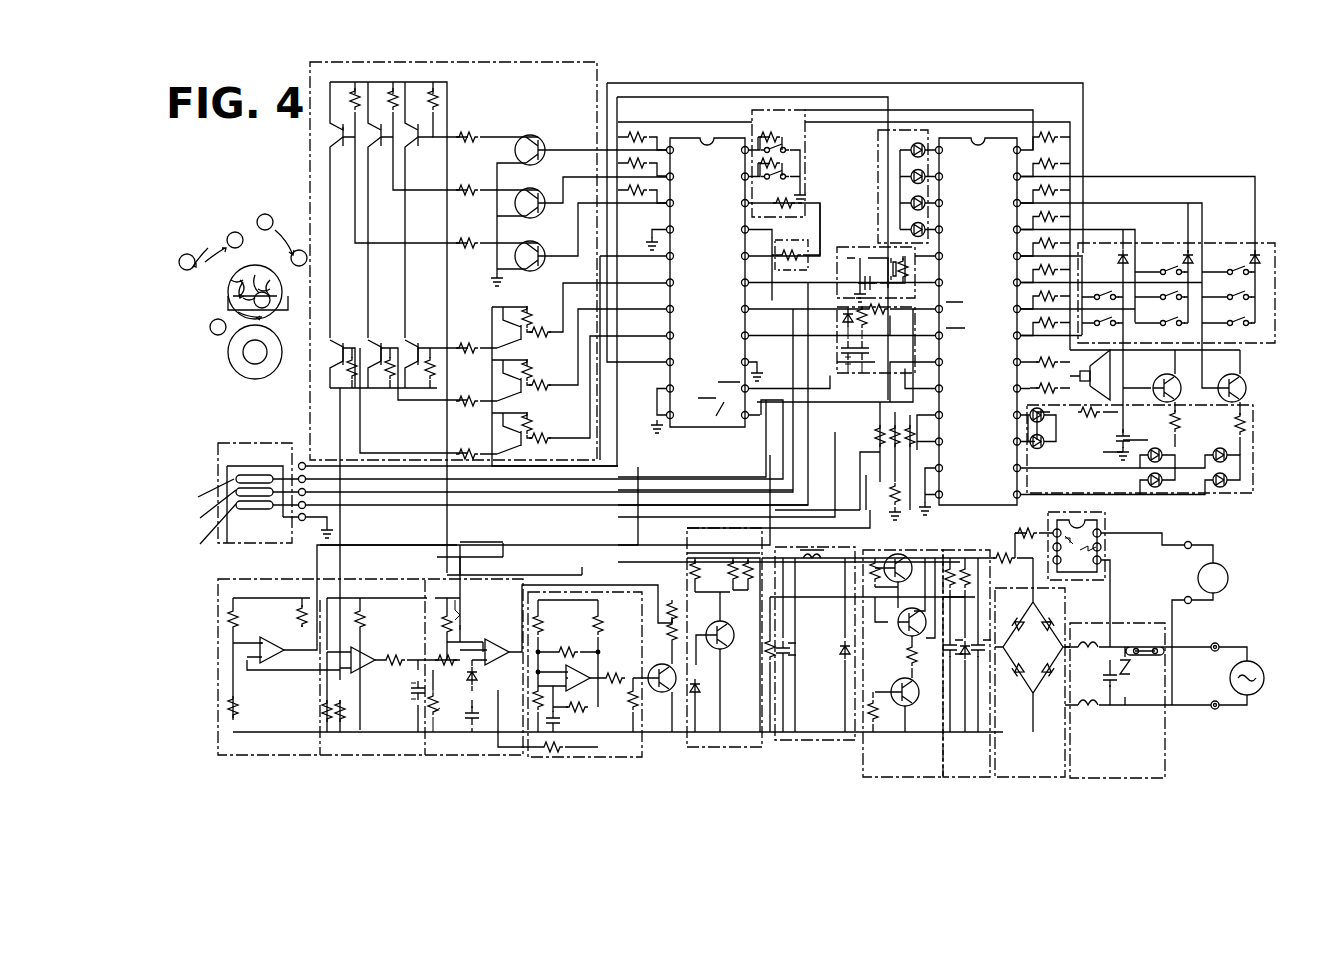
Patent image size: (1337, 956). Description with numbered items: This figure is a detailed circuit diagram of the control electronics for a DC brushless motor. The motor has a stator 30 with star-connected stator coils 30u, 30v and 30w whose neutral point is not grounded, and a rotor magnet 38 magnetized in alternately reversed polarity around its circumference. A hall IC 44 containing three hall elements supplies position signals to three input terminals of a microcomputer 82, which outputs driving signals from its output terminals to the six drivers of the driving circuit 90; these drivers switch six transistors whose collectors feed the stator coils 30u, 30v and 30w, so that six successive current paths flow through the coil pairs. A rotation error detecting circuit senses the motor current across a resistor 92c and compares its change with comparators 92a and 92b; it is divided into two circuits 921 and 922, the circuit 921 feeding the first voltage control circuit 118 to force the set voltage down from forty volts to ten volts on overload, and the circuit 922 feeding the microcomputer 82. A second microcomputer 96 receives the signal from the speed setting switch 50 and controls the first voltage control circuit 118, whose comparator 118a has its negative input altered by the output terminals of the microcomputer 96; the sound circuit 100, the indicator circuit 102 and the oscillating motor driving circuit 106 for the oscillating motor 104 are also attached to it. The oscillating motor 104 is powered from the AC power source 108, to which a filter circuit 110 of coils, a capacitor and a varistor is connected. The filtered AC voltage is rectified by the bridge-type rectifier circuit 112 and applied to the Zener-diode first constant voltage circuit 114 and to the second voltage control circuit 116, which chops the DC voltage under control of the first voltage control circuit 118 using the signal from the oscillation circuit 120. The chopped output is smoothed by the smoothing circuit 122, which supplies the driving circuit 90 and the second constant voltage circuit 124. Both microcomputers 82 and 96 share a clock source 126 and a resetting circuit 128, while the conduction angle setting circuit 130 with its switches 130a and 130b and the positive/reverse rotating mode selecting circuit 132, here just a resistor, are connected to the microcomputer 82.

The stator 30 is at (250, 264).
The stator coil 30u is at (230, 282).
The stator coil 30v is at (243, 300).
The stator coil 30w is at (285, 308).
The rotor magnet 38 is at (236, 365).
The hall IC 44 is at (254, 444).
The speed setting switch 50 is at (1275, 288).
The microcomputer 82 is at (705, 428).
The driving circuit 90 is at (598, 74).
The comparator 92a is at (395, 636).
The comparator 92b is at (282, 649).
The resistor 92c is at (350, 725).
The circuit 921 is at (388, 775).
The circuit 922 is at (290, 775).
The microcomputer 96 is at (1003, 136).
The sound circuit 100 is at (1108, 386).
The indicator circuit 102 is at (1253, 475).
The oscillating motor 104 is at (1228, 578).
The oscillating motor driving circuit 106 is at (1104, 551).
The AC power source 108 is at (1264, 672).
The filter circuit 110 is at (1165, 762).
The rectifier circuit 112 is at (1035, 778).
The first constant voltage circuit 114 is at (973, 778).
The second voltage control circuit 116 is at (918, 778).
The first voltage control circuit 118 is at (660, 695).
The comparator 118a is at (508, 635).
The oscillation circuit 120 is at (617, 755).
The smoothing circuit 122 is at (828, 740).
The second constant voltage circuit 124 is at (733, 753).
The clock source 126 is at (848, 250).
The resetting circuit 128 is at (856, 372).
The conduction angle setting circuit 130 is at (780, 110).
The switch 130a is at (767, 135).
The switch 130b is at (788, 170).
The positive/reverse rotating mode selecting circuit 132 is at (796, 258).